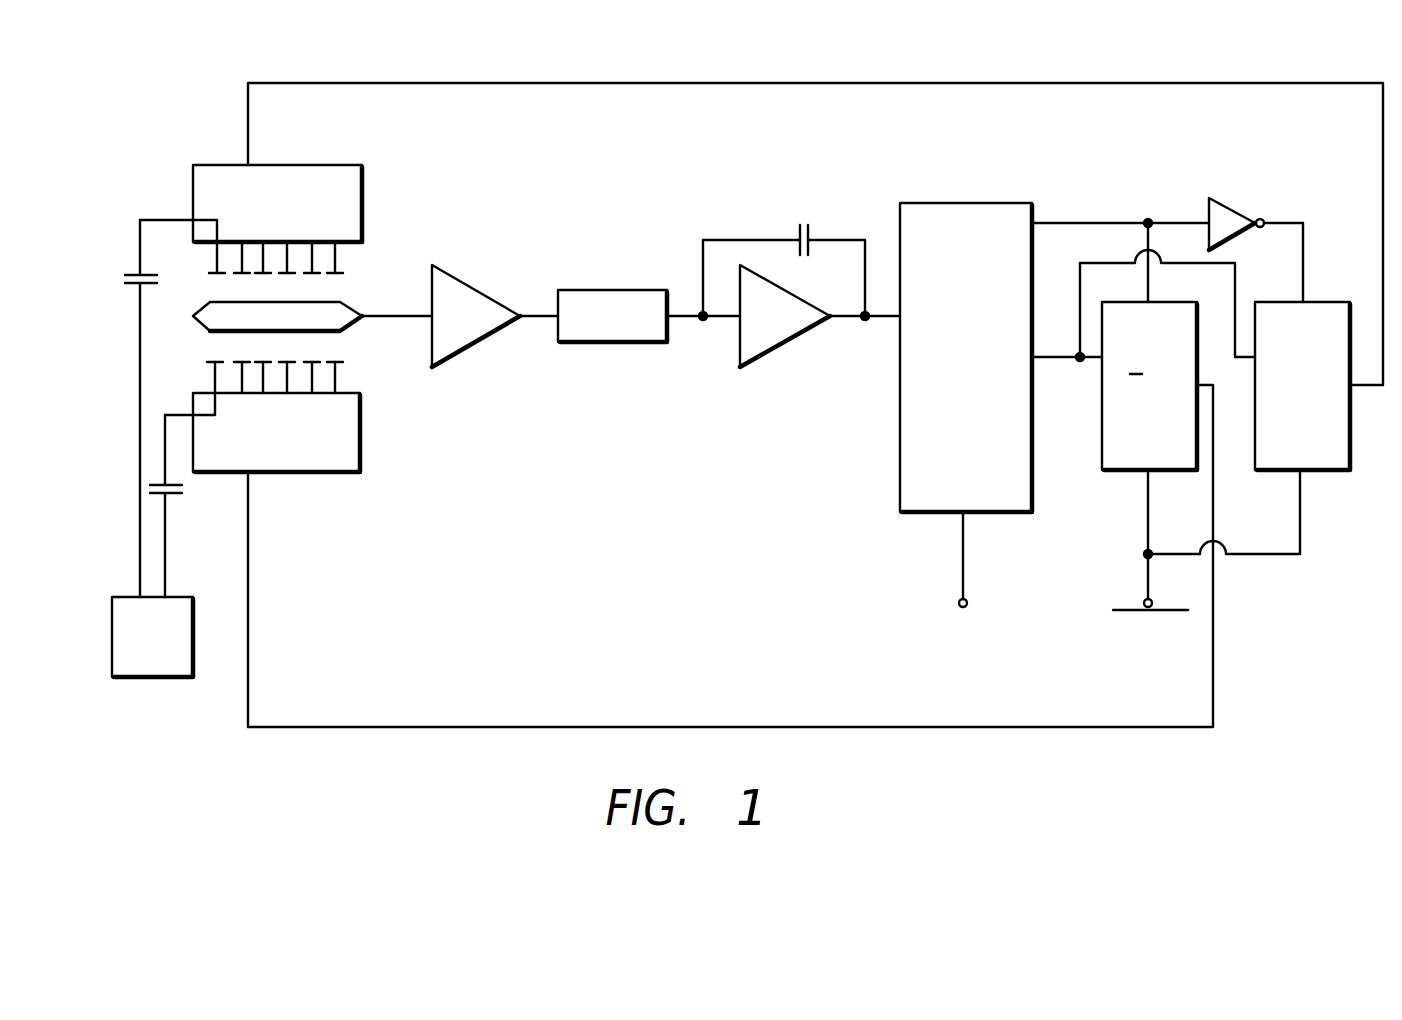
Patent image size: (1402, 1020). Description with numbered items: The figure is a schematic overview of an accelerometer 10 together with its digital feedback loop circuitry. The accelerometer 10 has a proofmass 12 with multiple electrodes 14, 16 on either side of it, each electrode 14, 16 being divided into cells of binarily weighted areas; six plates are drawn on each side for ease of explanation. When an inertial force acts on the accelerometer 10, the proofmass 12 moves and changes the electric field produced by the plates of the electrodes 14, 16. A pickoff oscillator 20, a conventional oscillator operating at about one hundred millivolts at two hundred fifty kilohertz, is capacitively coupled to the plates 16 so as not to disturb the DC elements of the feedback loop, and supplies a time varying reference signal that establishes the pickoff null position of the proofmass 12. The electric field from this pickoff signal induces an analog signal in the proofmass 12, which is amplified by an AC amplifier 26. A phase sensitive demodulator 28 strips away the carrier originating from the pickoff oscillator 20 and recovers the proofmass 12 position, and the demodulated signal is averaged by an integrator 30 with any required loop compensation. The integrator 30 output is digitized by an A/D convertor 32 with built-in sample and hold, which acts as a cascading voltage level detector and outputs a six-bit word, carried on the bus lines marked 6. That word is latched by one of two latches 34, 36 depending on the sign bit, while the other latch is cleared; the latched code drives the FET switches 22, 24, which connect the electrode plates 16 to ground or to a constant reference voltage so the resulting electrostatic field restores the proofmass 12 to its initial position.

The accelerometer 10 is at (155, 131).
The proofmass 12 is at (330, 318).
The electrode 14 is at (205, 266).
The electrode 16 is at (205, 367).
The pickoff oscillator 20 is at (112, 643).
The FET switches 22 is at (317, 163).
The FET switches 24 is at (282, 472).
The AC amplifier 26 is at (460, 279).
The phase sensitive demodulator 28 is at (608, 290).
The integrator 30 is at (775, 350).
The A/D convertor 32 is at (960, 203).
The latch 34 is at (1318, 302).
The latch 36 is at (1127, 472).
The data bus 6 is at (1045, 92).